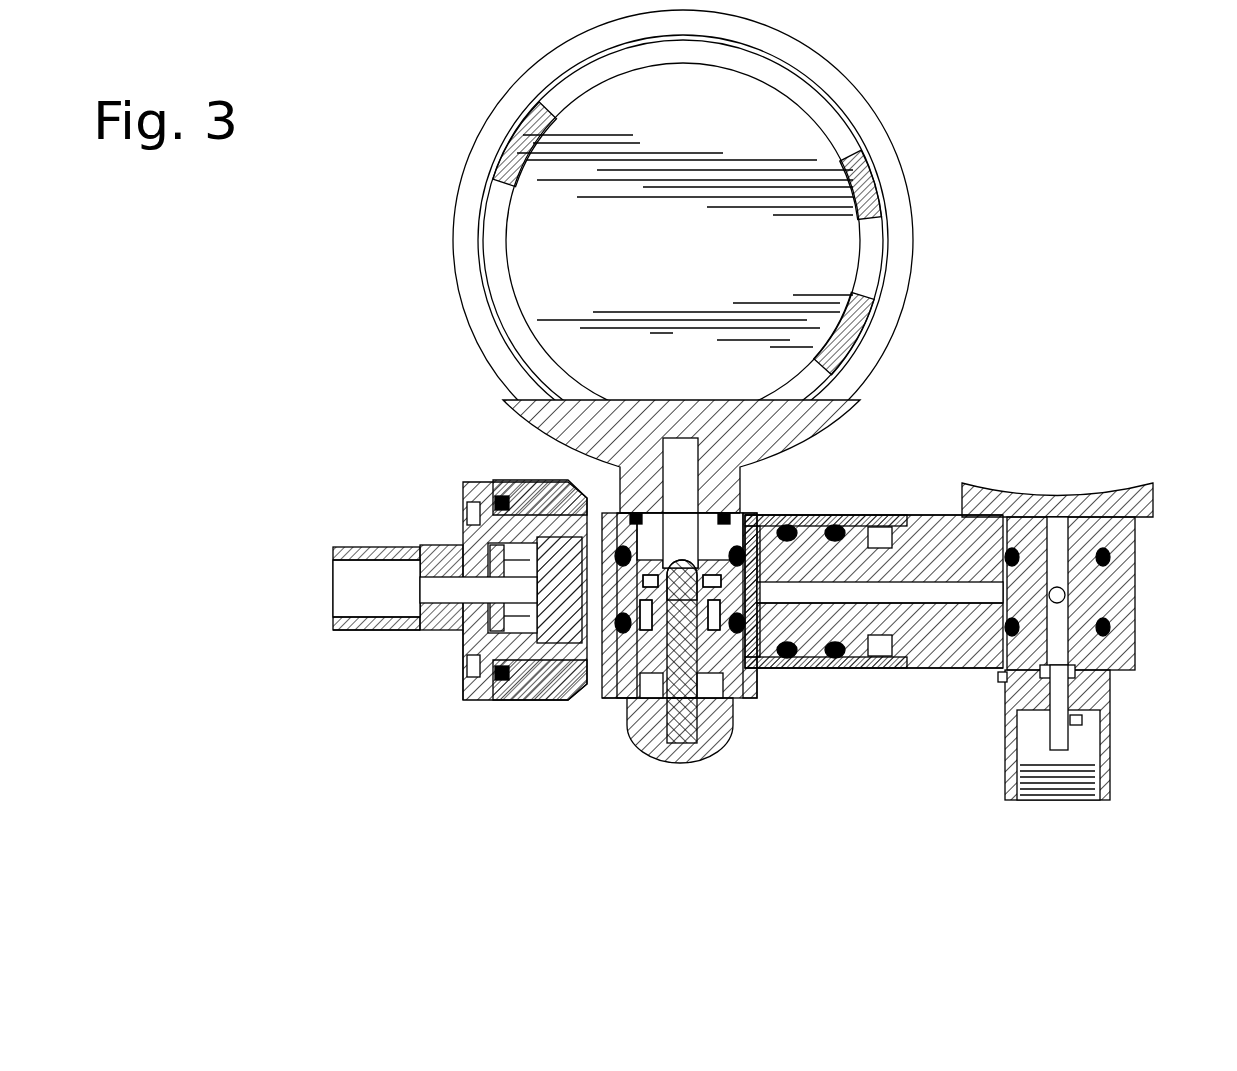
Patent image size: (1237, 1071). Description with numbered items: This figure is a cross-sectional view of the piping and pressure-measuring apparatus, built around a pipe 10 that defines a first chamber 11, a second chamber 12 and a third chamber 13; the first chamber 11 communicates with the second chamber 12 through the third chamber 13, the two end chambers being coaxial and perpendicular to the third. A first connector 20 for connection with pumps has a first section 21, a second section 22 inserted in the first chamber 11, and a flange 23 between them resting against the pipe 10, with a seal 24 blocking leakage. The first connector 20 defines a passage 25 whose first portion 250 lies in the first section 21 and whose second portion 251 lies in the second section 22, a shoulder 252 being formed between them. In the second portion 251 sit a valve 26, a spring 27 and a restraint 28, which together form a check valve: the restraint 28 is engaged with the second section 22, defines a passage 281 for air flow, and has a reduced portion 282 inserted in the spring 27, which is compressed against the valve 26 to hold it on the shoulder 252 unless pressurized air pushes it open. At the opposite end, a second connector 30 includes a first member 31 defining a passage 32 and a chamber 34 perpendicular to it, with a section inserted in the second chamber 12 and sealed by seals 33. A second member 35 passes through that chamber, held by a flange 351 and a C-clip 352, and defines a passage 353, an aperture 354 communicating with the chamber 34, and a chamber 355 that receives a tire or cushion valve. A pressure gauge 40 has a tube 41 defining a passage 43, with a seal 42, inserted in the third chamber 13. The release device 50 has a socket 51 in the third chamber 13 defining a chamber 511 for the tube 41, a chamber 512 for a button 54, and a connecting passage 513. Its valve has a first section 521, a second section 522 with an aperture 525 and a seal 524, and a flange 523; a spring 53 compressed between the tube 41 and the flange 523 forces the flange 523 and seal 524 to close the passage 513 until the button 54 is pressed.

The pipe 10 is at (944, 498).
The first chamber 11 is at (582, 692).
The second chamber 12 is at (780, 668).
The third chamber 13 is at (748, 512).
The first connector 20 is at (322, 642).
The first section 21 is at (350, 632).
The second section 22 is at (535, 702).
The flange 23 is at (497, 500).
The seal 24 is at (497, 482).
The passage 25 is at (435, 640).
The valve 26 is at (333, 573).
The spring 27 is at (505, 560).
The restraint 28 is at (490, 548).
The second connector 30 is at (1118, 470).
The first member 31 is at (888, 620).
The passage 32 is at (943, 596).
The seals 33 is at (833, 670).
The chamber 34 is at (1118, 580).
The second member 35 is at (1133, 633).
The pressure gauge 40 is at (880, 77).
The tube 41 is at (680, 460).
The seal 42 is at (735, 512).
The passage 43 is at (800, 399).
The release device 50 is at (817, 863).
The socket 51 is at (612, 700).
The spring 53 is at (622, 692).
The button 54 is at (690, 740).
The first portion 250 is at (383, 632).
The second portion 251 is at (500, 702).
The shoulder 252 is at (462, 645).
The passage 281 is at (420, 592).
The reduced portion 282 is at (400, 546).
The flange 351 is at (1138, 501).
The C-clip 352 is at (1008, 679).
The passage 353 is at (1055, 638).
The aperture 354 is at (1063, 597).
The chamber 355 is at (1093, 725).
The chamber 511 is at (620, 512).
The chamber 512 is at (684, 720).
The passage 513 is at (725, 700).
The first section 521 is at (752, 690).
The second section 522 is at (690, 745).
The flange 523 is at (642, 700).
The seal 524 is at (722, 700).
The aperture 525 is at (668, 742).